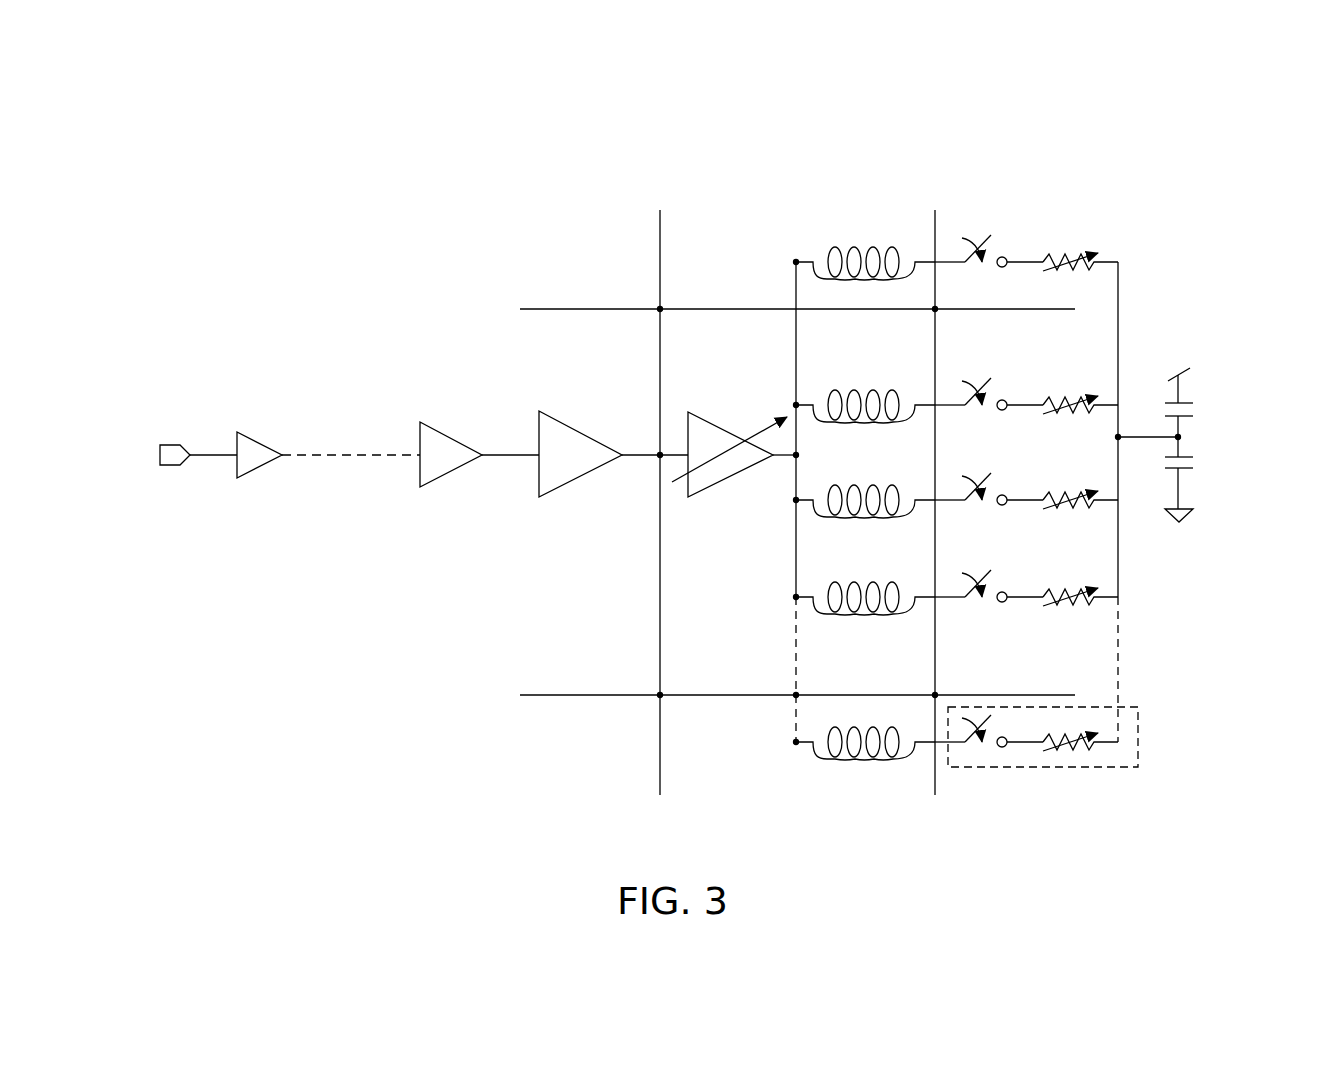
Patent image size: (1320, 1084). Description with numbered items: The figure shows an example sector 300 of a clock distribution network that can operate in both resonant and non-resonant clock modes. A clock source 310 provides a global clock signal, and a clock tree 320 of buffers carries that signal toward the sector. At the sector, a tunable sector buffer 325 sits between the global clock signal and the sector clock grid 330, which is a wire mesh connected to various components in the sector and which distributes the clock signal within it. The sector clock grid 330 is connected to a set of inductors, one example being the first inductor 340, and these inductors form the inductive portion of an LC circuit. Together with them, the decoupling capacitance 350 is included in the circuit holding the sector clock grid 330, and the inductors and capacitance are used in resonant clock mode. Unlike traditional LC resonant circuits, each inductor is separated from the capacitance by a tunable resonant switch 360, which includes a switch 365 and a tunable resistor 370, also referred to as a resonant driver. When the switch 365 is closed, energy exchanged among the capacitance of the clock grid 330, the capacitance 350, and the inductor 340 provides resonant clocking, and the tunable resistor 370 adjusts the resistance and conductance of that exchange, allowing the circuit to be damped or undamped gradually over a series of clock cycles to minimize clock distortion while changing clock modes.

The sector 300 is at (704, 472).
The clock source 310 is at (169, 382).
The clock tree 320 is at (462, 397).
The tunable sector buffer 325 is at (721, 422).
The sector clock grid 330 is at (562, 308).
The inductor L1 340 is at (865, 452).
The capacitance Cdcap 350 is at (1185, 383).
The tunable resonant switch 360 is at (1142, 722).
The switch 365 is at (989, 428).
The tunable resistor 370 is at (1082, 430).